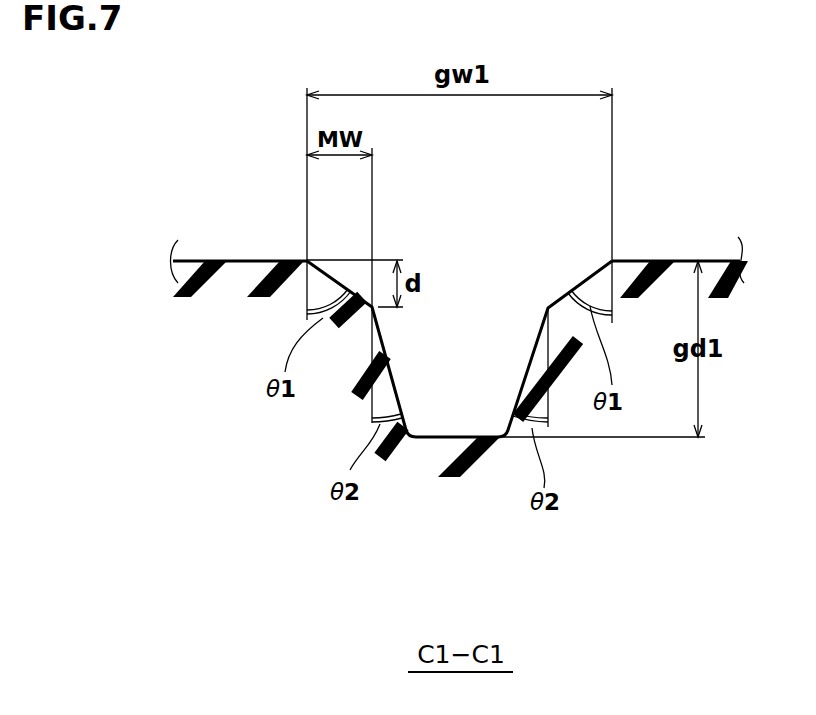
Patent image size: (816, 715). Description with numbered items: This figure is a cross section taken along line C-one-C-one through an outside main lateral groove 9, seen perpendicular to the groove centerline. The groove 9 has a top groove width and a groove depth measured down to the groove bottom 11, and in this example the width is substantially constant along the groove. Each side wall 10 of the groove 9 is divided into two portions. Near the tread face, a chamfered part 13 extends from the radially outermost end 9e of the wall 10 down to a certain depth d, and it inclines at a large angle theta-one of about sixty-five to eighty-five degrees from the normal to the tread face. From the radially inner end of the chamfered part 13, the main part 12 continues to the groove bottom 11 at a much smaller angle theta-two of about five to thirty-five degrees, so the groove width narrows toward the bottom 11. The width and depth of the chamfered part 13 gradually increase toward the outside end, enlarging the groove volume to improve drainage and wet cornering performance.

The main lateral groove 9 is at (473, 307).
The radially outermost end of the wall 9e is at (313, 270).
The side wall 10 is at (380, 190).
The groove bottom 11 is at (457, 421).
The main part 12 is at (383, 338).
The chamfered part 13 is at (342, 282).